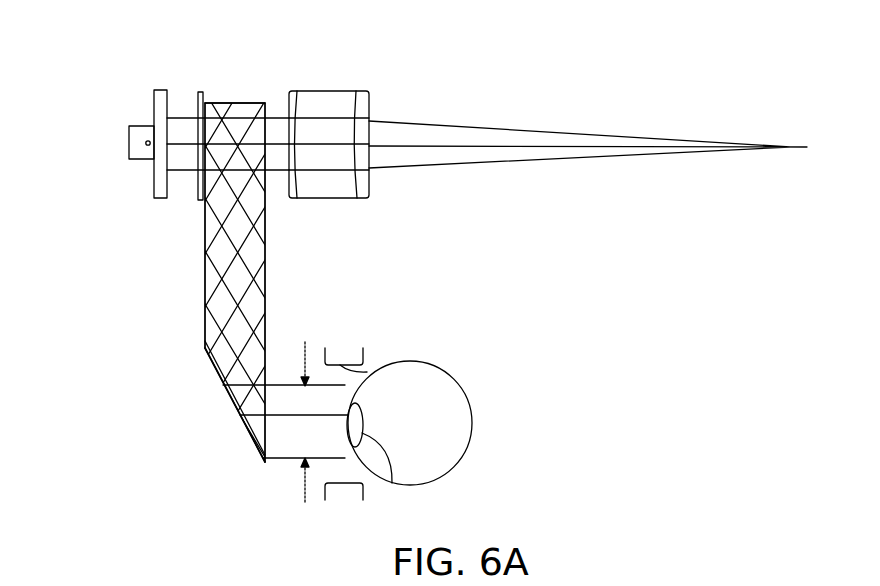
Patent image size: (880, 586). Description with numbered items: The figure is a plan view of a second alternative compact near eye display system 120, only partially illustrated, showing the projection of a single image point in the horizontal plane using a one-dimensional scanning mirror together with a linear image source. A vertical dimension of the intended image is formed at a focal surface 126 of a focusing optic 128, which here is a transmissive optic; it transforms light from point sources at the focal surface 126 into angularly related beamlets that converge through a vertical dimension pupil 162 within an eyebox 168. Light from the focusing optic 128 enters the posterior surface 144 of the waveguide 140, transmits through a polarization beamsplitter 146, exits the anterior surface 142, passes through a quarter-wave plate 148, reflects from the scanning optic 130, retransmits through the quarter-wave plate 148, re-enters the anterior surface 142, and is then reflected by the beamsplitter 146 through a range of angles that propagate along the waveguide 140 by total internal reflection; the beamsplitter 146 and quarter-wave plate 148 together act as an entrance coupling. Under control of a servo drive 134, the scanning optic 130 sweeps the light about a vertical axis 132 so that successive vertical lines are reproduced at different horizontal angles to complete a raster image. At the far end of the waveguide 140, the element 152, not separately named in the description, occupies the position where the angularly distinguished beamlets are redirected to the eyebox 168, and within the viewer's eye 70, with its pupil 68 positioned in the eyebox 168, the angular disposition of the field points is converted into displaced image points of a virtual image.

The viewer's eye 70 is at (440, 405).
The pupil 68 is at (392, 483).
The near eye display system 120 is at (590, 261).
The focal surface 126 is at (807, 146).
The focusing optic 128 is at (323, 183).
The scanning optic 130 is at (150, 97).
The vertical axis 132 is at (147, 146).
The servo drive 134 is at (128, 140).
The waveguide 140 is at (200, 292).
The anterior surface 142 is at (205, 273).
The posterior surface 144 is at (265, 237).
The polarization beamsplitter 146 is at (240, 103).
The quarter-wave plate 148 is at (200, 96).
The mirror 152 is at (222, 398).
The vertical dimension pupil 162 is at (298, 487).
The eyebox 168 is at (367, 372).